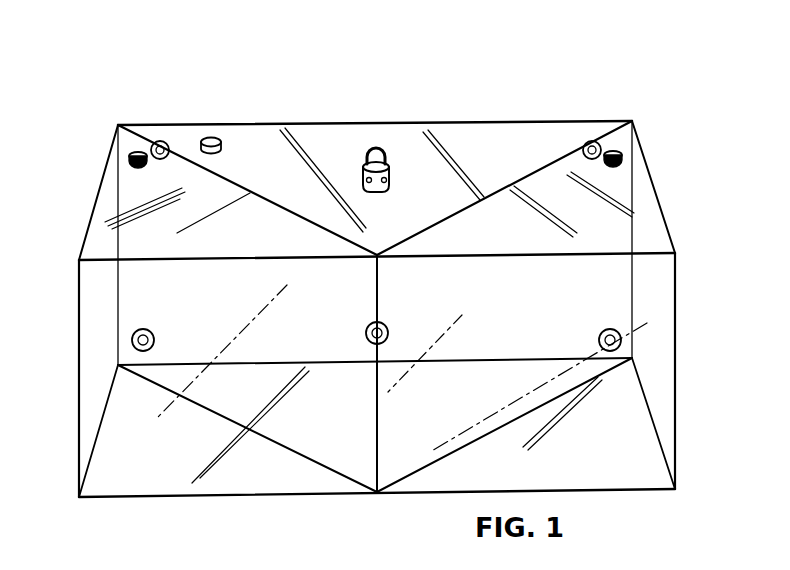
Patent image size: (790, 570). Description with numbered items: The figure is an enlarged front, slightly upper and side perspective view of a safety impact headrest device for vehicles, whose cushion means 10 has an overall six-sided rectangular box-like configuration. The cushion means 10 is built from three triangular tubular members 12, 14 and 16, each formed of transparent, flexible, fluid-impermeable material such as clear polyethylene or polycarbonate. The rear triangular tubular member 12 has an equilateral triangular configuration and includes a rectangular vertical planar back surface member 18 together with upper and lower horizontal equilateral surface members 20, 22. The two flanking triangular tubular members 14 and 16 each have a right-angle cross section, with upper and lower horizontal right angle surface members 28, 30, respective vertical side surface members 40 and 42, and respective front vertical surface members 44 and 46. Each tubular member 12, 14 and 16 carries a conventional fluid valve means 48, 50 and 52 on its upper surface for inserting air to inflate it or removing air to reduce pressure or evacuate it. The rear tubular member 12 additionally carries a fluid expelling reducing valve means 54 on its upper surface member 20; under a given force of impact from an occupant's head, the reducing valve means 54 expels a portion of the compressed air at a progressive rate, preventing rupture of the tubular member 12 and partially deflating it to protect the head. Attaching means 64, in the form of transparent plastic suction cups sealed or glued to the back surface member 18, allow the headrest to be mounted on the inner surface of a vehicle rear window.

The cushion means 10 is at (170, 116).
The triangular tubular member 12 is at (320, 117).
The triangular tubular member 14 is at (88, 212).
The triangular tubular member 16 is at (652, 227).
The back surface member 18 is at (510, 120).
The upper horizontal equilateral surface member 20 is at (255, 140).
The lower horizontal equilateral surface member 22 is at (381, 498).
The upper horizontal right angle surface member 28 is at (105, 242).
The lower horizontal right angle surface member 30 is at (202, 498).
The vertical side surface member 40 is at (79, 352).
The vertical side surface member 42 is at (675, 333).
The front vertical surface member 44 is at (102, 383).
The front vertical surface member 46 is at (653, 407).
The fluid valve means 48 is at (213, 136).
The fluid valve means 50 is at (131, 156).
The fluid valve means 52 is at (624, 157).
The fluid expelling reducing valve means 54 is at (393, 156).
The attaching means 64 is at (589, 141).